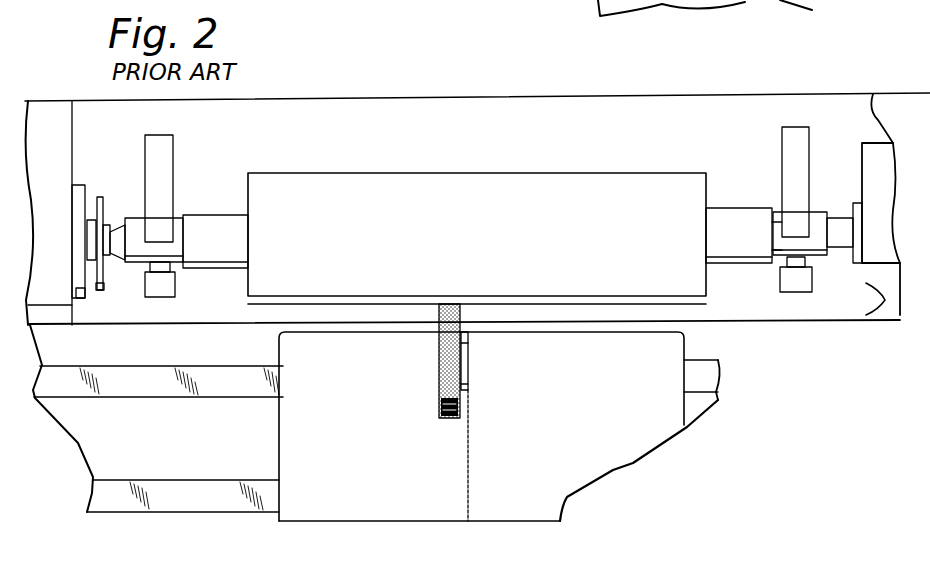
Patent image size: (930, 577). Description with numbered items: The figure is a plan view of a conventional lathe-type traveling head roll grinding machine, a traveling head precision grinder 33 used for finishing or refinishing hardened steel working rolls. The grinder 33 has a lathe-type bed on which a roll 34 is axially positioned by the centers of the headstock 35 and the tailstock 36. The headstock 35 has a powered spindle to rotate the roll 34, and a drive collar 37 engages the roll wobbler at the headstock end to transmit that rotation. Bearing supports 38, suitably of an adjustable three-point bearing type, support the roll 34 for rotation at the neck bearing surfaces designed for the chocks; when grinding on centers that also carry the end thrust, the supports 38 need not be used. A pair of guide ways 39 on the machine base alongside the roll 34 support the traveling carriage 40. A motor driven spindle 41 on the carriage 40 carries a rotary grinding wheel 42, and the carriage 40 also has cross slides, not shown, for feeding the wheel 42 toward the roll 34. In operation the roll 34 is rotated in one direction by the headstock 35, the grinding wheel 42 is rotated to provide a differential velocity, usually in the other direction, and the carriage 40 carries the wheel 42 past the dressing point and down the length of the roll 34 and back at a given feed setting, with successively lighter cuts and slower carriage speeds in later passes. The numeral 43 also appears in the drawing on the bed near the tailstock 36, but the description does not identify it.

The traveling head precision grinder 33 is at (383, 518).
The roll 34 is at (437, 173).
The headstock 35 is at (60, 167).
The tailstock 36 is at (866, 168).
The drive collar 37 is at (101, 230).
The bearing supports 38 is at (172, 160).
The guide ways 39 is at (193, 368).
The traveling carriage 40 is at (300, 437).
The motor driven spindle 41 is at (466, 361).
The rotary grinding wheel 42 is at (443, 380).
The table plate 43 is at (862, 318).